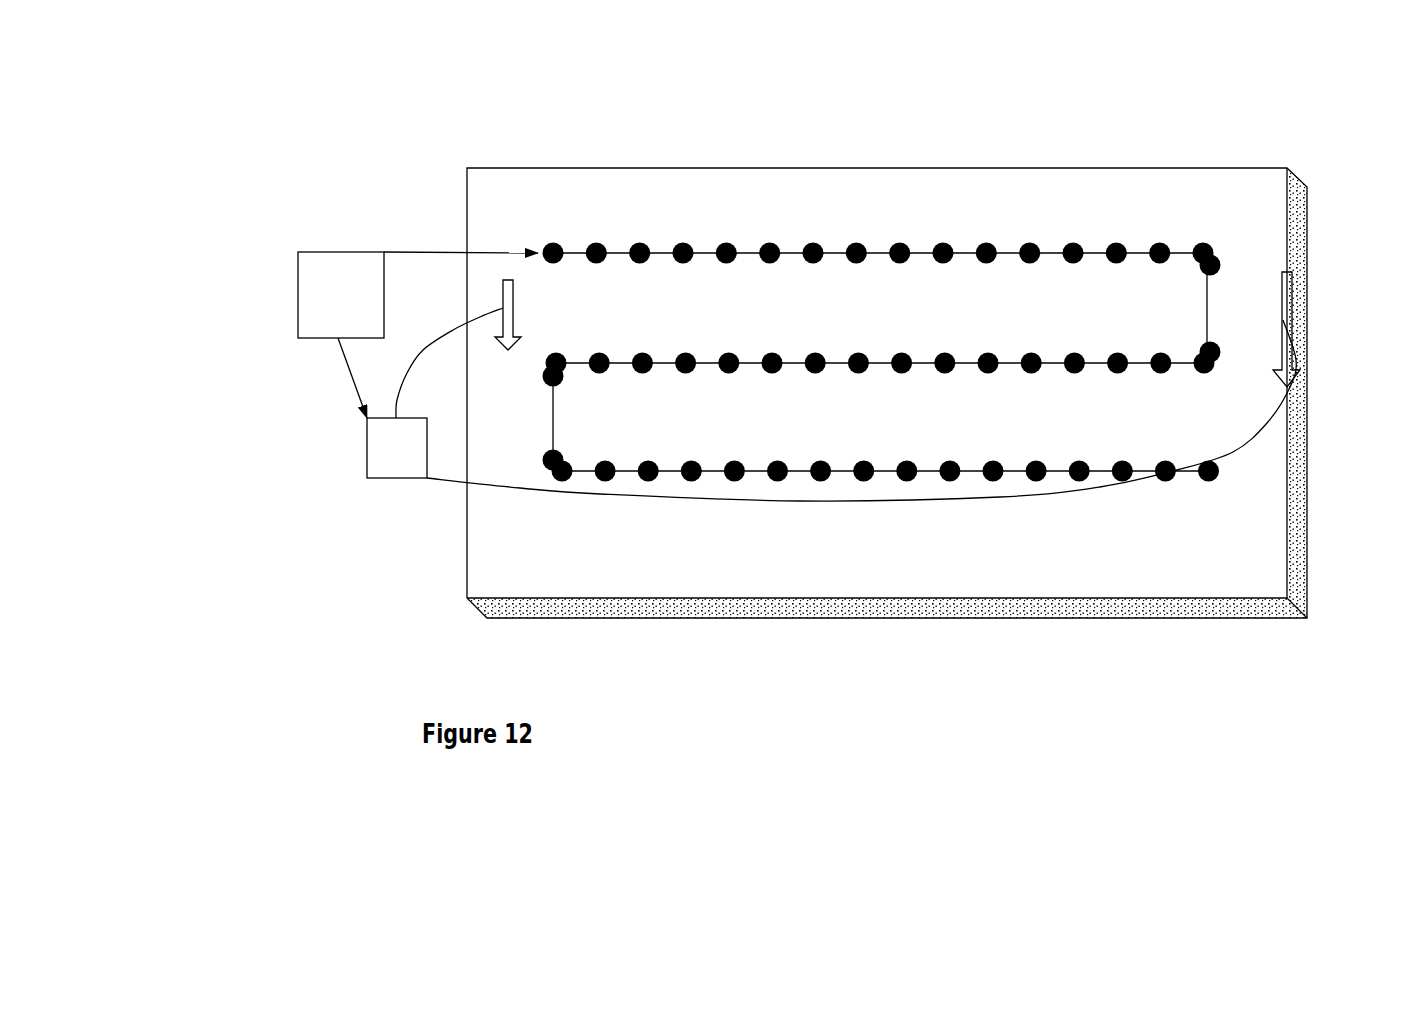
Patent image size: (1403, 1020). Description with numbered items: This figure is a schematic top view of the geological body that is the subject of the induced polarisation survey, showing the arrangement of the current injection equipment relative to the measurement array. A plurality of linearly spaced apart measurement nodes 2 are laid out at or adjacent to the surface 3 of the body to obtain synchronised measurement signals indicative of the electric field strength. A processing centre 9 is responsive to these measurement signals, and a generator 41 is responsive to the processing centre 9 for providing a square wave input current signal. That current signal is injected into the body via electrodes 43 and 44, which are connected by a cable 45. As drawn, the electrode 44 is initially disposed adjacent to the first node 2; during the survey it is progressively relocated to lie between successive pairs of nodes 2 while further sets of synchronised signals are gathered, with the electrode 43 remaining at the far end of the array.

The measurement nodes 2 is at (1023, 243).
The surface 3 is at (1060, 568).
The processing centre 9 is at (298, 250).
The generator 41 is at (367, 478).
The electrode 43 is at (1296, 292).
The electrode 44 is at (504, 292).
The cable 45 is at (403, 378).